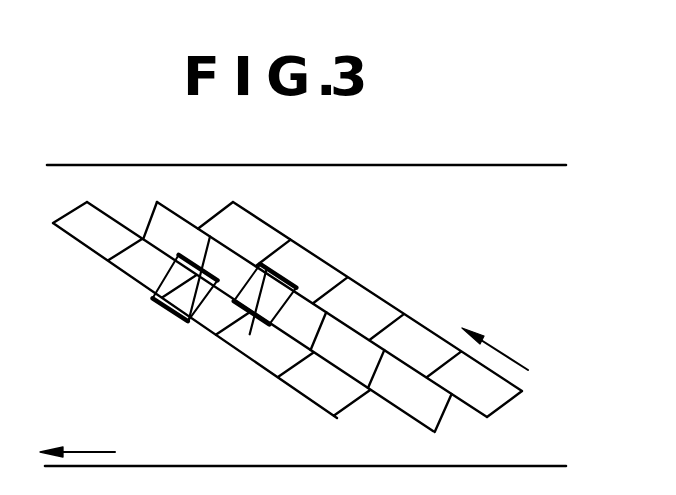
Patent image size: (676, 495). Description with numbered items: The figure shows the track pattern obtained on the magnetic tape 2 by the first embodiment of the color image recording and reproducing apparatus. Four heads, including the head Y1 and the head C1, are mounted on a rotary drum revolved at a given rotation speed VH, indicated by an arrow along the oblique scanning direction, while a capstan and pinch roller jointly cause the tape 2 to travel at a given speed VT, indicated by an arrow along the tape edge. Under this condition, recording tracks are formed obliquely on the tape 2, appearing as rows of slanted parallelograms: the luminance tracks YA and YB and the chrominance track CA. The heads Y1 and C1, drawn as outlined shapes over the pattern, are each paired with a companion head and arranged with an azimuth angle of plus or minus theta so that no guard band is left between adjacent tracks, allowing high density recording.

The magnetic tape 2 is at (502, 165).
The luminance recording track YA is at (368, 391).
The luminance recording track YB is at (510, 399).
The chrominance recording track CA is at (447, 396).
The head Y1 is at (167, 313).
The head C1 is at (257, 317).
The rotation speed VH is at (495, 341).
The tape speed VT is at (77, 433).